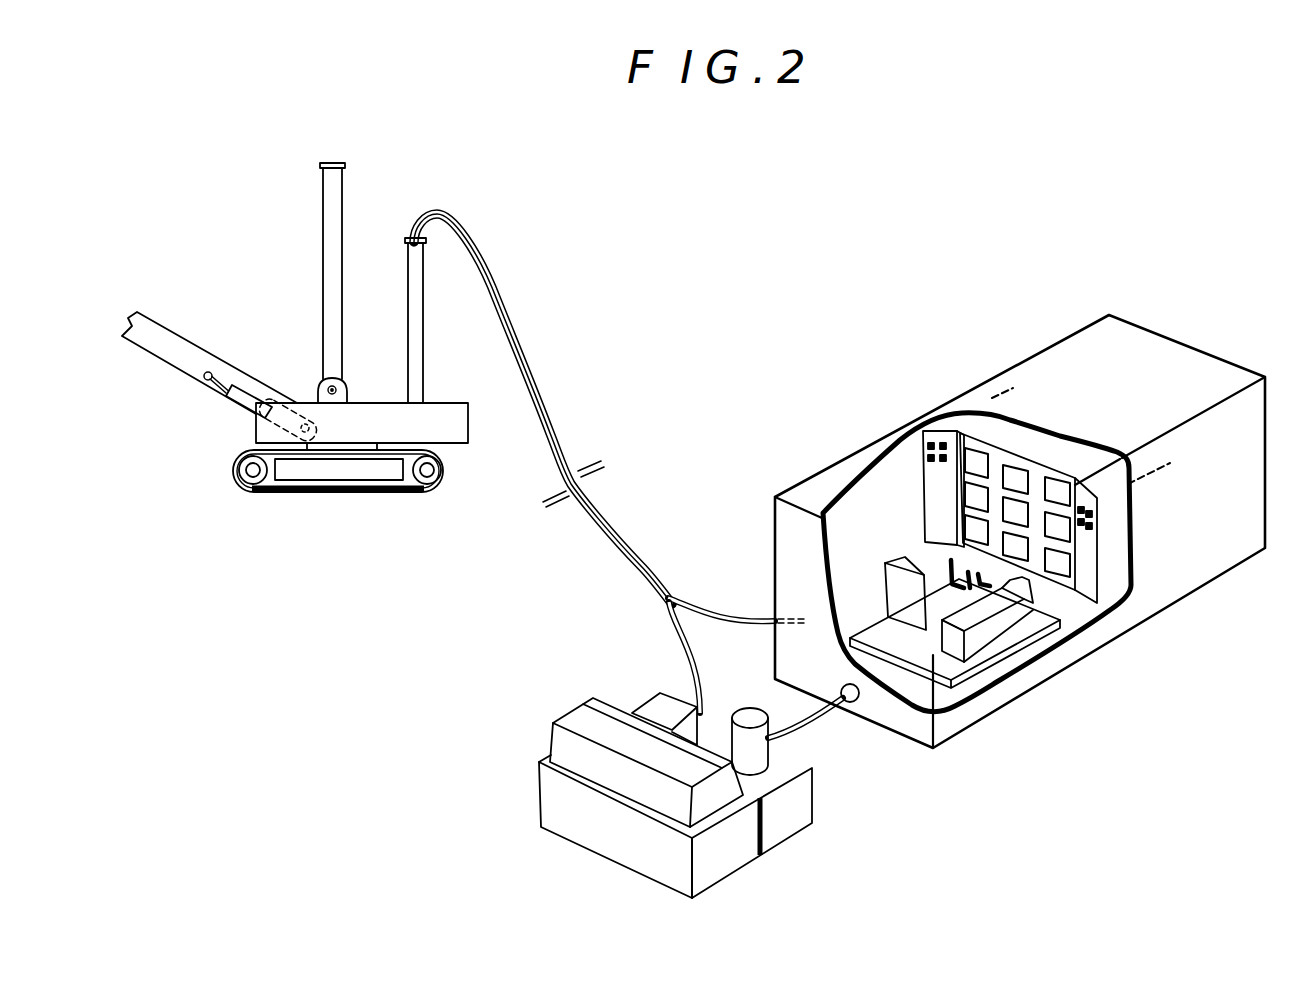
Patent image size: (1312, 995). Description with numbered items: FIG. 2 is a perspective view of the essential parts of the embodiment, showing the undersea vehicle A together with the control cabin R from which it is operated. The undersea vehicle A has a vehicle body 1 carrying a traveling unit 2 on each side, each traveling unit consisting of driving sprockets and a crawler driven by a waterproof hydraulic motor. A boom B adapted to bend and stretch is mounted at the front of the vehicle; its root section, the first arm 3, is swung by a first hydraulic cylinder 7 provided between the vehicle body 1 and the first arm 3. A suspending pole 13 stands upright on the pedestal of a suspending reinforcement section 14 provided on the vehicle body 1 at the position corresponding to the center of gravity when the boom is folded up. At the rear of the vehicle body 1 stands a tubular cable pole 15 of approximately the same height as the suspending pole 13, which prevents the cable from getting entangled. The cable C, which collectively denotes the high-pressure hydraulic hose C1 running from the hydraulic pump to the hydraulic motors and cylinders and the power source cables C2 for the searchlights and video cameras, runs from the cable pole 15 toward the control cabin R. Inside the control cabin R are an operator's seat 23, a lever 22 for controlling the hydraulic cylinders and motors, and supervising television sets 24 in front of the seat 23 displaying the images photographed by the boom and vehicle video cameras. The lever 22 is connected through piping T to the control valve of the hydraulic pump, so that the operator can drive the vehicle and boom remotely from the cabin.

The vehicle body 1 is at (476, 425).
The traveling unit 2 is at (428, 498).
The first arm 3 is at (175, 334).
The first hydraulic cylinder 7 is at (217, 397).
The suspending pole 13 is at (323, 266).
The suspending reinforcement section 14 is at (320, 386).
The tubular cable pole 15 is at (424, 383).
The undersea vehicle A is at (376, 351).
The boom B is at (203, 371).
The cable C is at (557, 430).
The high-pressure hydraulic hose C1 is at (664, 610).
The power source cable C2 is at (690, 600).
The piping T is at (843, 703).
The control cabin R is at (1020, 531).
The lever 22 is at (940, 562).
The operator's seat 23 is at (886, 596).
The supervising television set 24 is at (1012, 468).